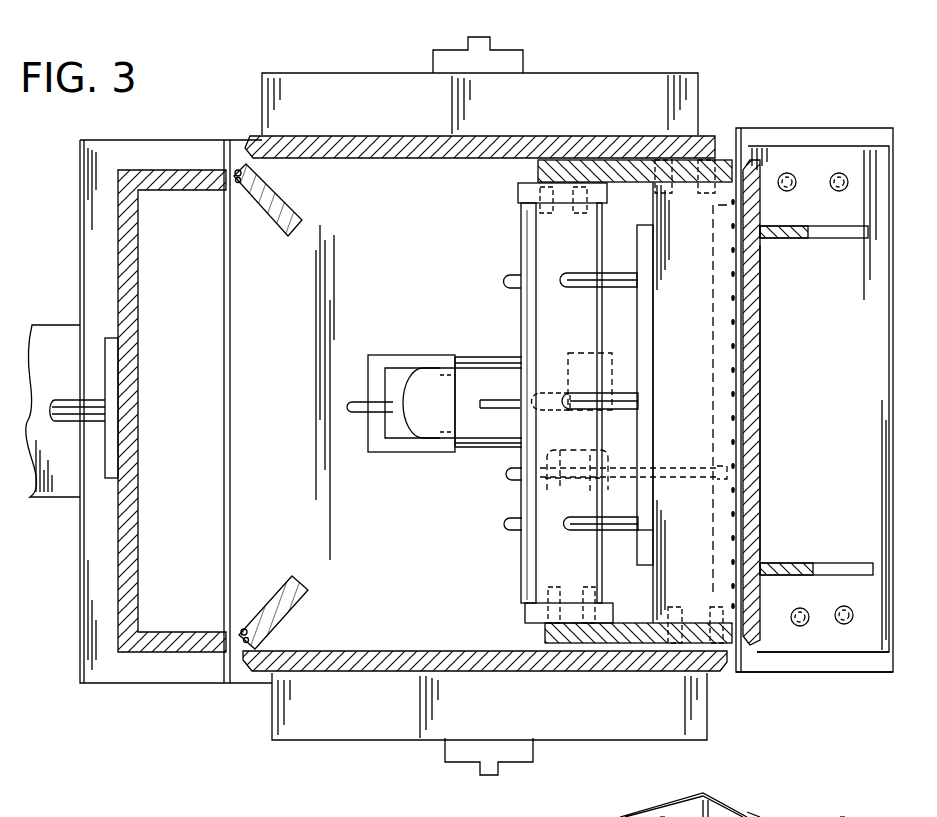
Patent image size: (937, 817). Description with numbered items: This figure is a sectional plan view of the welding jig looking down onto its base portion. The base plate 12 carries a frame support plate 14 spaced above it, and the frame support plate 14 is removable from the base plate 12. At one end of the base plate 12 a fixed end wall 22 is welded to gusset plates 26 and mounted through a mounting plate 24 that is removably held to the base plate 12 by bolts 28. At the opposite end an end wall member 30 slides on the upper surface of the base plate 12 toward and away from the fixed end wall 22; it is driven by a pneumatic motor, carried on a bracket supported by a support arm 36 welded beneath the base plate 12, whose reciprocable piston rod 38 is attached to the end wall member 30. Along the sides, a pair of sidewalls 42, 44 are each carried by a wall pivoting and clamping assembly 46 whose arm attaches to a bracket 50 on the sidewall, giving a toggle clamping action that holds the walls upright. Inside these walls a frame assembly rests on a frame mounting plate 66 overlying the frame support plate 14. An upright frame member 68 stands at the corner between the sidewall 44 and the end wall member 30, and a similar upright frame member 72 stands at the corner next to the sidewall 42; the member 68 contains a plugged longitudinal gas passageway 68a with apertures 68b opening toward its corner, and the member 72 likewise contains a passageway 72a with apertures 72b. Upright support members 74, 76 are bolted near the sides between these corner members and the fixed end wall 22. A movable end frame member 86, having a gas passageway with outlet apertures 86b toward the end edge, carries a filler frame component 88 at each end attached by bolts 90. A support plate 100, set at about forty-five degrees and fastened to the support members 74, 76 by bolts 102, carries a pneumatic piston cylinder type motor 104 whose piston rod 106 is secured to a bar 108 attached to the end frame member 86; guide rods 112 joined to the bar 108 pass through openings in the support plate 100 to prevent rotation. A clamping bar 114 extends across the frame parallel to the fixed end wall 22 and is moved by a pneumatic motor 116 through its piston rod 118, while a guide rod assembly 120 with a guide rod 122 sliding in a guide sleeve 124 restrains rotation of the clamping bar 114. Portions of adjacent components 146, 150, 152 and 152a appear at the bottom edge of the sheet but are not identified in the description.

The base plate 12 is at (138, 690).
The frame support plate 14 is at (736, 146).
The fixed end wall 22 is at (758, 515).
The mounting plate 24 is at (822, 660).
The gusset plates 26 is at (790, 240).
The bolts 28 is at (840, 172).
The end wall member 30 is at (158, 172).
The support arm 36 is at (58, 323).
The piston rod 38 is at (75, 415).
The sidewall 42 is at (335, 668).
The sidewall 44 is at (390, 135).
The wall pivoting and clamping assembly 46 is at (505, 45).
The bracket 50 is at (417, 408).
The frame mounting plate 66 is at (238, 708).
The upright frame member 68 is at (285, 212).
The longitudinal gas passageway 68a is at (238, 178).
The apertures 68b is at (236, 172).
The upright frame member 72 is at (290, 592).
The longitudinal gas passageway 72a is at (243, 628).
The apertures 72b is at (242, 652).
The upright support member 74 is at (518, 195).
The upright support member 76 is at (525, 613).
The end frame member 86 is at (752, 358).
The outlet apertures 86b is at (736, 346).
The filler frame component 88 is at (592, 170).
The bolts 90 is at (705, 158).
The support plate 100 is at (521, 300).
The bolts 102 is at (580, 218).
The pneumatic piston cylinder type motor 104 is at (425, 440).
The piston rod 106 is at (612, 392).
The bar 108 is at (642, 298).
The guide rods 112 is at (603, 272).
The clamping bar 114 is at (690, 553).
The pneumatic motor 116 is at (443, 350).
The piston rod 118 is at (665, 388).
The guide rod assembly 120 is at (632, 448).
The guide rod 122 is at (530, 492).
The guide sleeve 124 is at (512, 474).
The frame member 146 is at (838, 816).
The frame member 150 is at (758, 816).
The cover 152 is at (637, 805).
The cover edge 152a is at (575, 812).